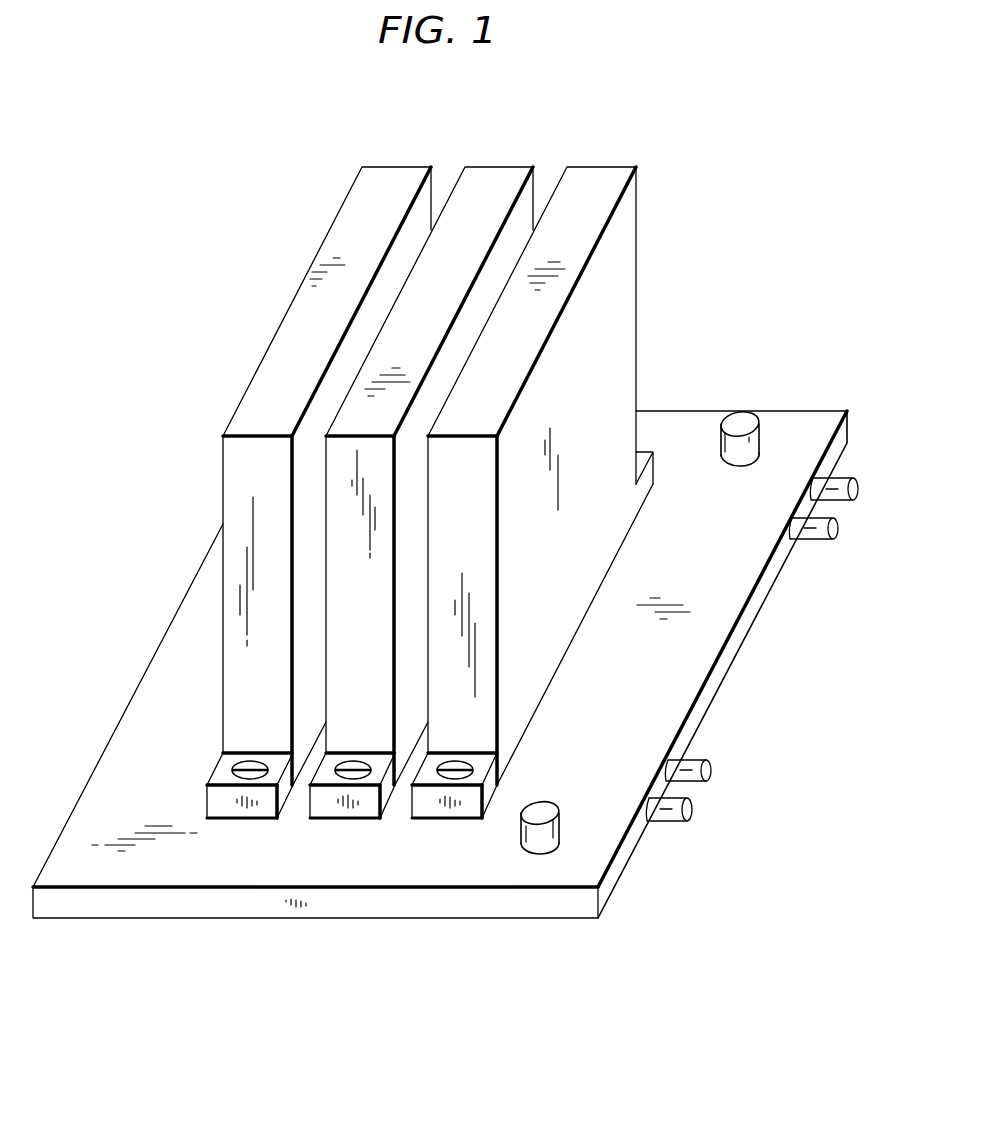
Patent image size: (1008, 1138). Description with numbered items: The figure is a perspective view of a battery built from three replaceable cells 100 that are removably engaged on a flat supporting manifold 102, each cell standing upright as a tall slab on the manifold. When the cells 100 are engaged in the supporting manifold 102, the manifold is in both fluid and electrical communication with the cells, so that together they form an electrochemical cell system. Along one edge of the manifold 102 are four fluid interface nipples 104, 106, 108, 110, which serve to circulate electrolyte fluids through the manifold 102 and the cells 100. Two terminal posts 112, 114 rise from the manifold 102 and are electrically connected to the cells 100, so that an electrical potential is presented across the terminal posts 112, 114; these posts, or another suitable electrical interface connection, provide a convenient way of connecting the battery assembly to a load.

The replaceable cells 100 is at (393, 166).
The supporting manifold 102 is at (483, 905).
The fluid interface nipple 104 is at (692, 811).
The fluid interface nipple 106 is at (712, 771).
The fluid interface nipple 108 is at (838, 530).
The fluid interface nipple 110 is at (858, 491).
The terminal post 112 is at (554, 834).
The terminal post 114 is at (737, 458).